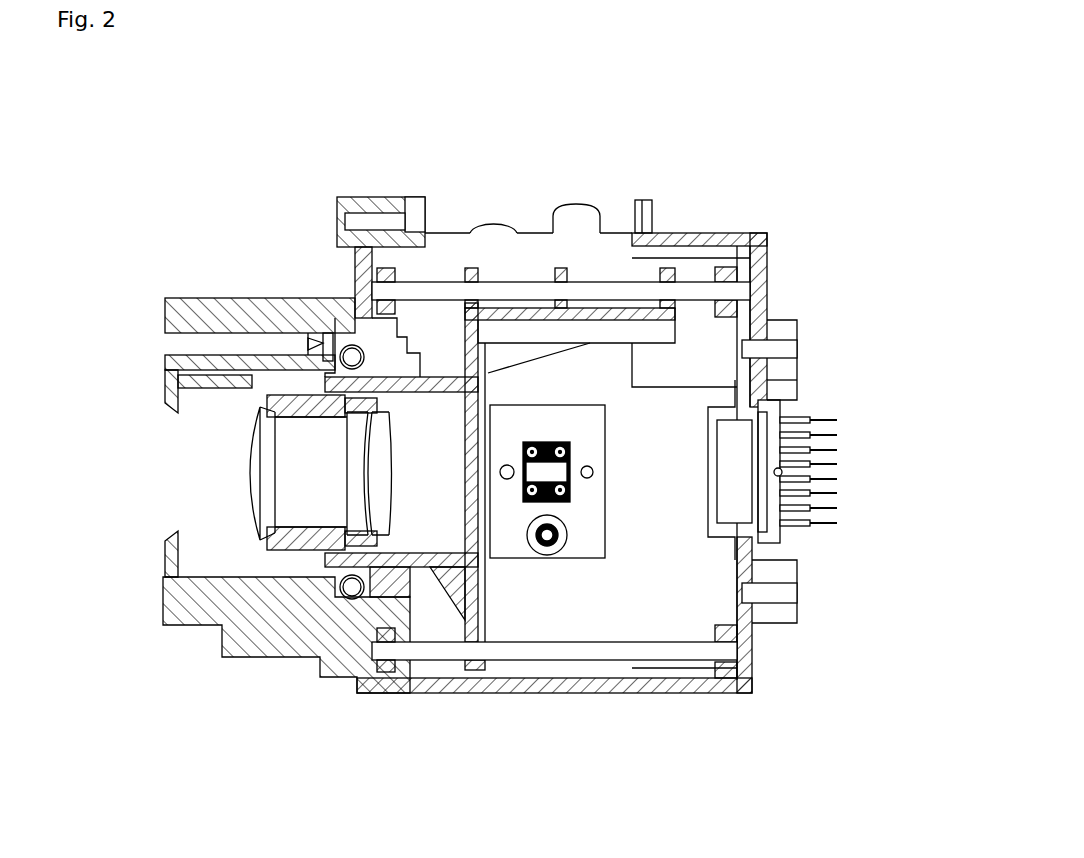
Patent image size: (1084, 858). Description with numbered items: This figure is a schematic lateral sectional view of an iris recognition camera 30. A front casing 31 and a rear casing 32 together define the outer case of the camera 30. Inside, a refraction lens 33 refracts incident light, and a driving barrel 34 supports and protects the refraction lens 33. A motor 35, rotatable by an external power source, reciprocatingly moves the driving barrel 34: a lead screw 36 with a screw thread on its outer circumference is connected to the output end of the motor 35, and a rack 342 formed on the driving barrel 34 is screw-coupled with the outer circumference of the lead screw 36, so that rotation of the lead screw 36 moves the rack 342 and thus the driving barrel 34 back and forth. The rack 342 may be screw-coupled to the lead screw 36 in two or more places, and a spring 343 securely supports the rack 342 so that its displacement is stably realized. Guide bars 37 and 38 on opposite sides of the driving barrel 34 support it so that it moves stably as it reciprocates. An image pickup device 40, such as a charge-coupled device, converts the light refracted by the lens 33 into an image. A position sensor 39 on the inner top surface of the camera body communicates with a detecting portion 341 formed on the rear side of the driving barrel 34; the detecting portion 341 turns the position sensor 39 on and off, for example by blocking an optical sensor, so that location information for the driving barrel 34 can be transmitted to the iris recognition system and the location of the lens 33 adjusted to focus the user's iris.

The iris recognition camera 30 is at (514, 479).
The front casing 31 is at (183, 305).
The rear casing 32 is at (745, 670).
The refraction lens 33 is at (263, 473).
The driving barrel 34 is at (463, 620).
The motor 35 is at (742, 282).
The lead screw 36 is at (445, 282).
The guide bar 37 is at (643, 650).
The guide bar 38 is at (455, 282).
The position sensor 39 is at (573, 497).
The image pickup device 40 is at (778, 487).
The detecting portion 341 is at (499, 462).
The rack 342 is at (490, 290).
The spring 343 is at (558, 270).